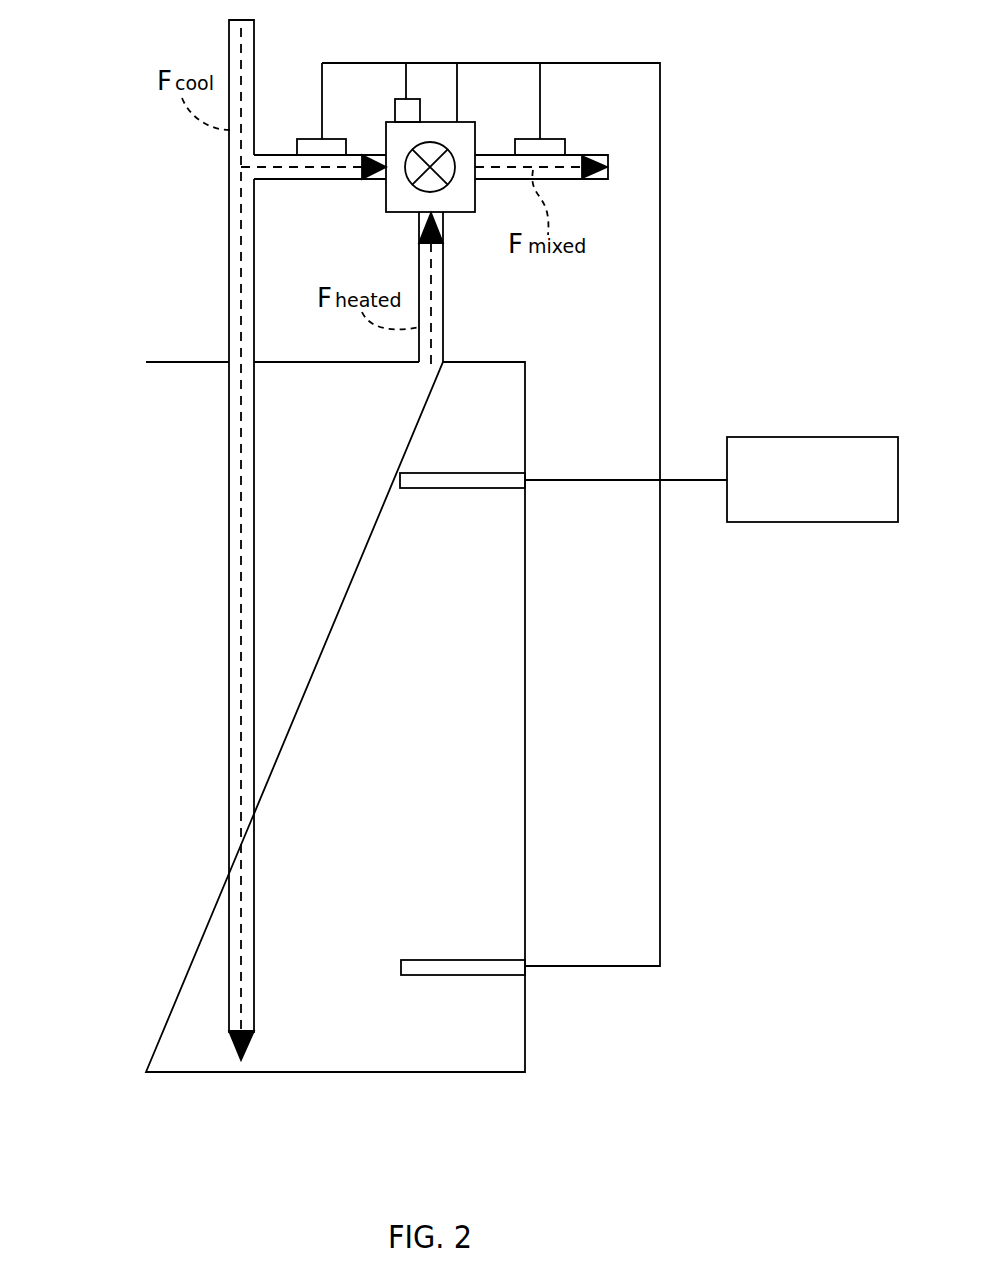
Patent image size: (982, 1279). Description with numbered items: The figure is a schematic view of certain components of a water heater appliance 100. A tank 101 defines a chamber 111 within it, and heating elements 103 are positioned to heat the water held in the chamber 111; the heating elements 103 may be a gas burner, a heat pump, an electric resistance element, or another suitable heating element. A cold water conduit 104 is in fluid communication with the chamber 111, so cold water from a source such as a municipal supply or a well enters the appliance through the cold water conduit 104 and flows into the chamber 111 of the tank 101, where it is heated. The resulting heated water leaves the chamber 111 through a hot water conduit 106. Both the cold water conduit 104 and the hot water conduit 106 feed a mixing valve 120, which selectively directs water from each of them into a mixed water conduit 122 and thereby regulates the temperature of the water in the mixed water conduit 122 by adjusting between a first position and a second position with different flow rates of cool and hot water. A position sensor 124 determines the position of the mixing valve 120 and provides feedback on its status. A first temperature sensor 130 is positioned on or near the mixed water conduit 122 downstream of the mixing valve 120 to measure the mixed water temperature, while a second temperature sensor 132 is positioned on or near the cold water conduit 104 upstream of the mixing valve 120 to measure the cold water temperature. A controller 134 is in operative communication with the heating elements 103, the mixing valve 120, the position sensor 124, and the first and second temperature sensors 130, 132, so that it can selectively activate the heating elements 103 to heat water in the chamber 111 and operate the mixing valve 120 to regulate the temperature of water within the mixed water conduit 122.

The water heater appliance 100 is at (102, 135).
The tank 101 is at (165, 568).
The heating elements 103 is at (450, 488).
The cold water conduit 104 is at (228, 322).
The hot water conduit 106 is at (443, 297).
The chamber 111 is at (192, 793).
The mixing valve 120 is at (407, 213).
The mixed water conduit 122 is at (587, 180).
The position sensor 124 is at (395, 110).
The first temperature sensor 130 is at (565, 148).
The second temperature sensor 132 is at (298, 138).
The controller 134 is at (812, 479).